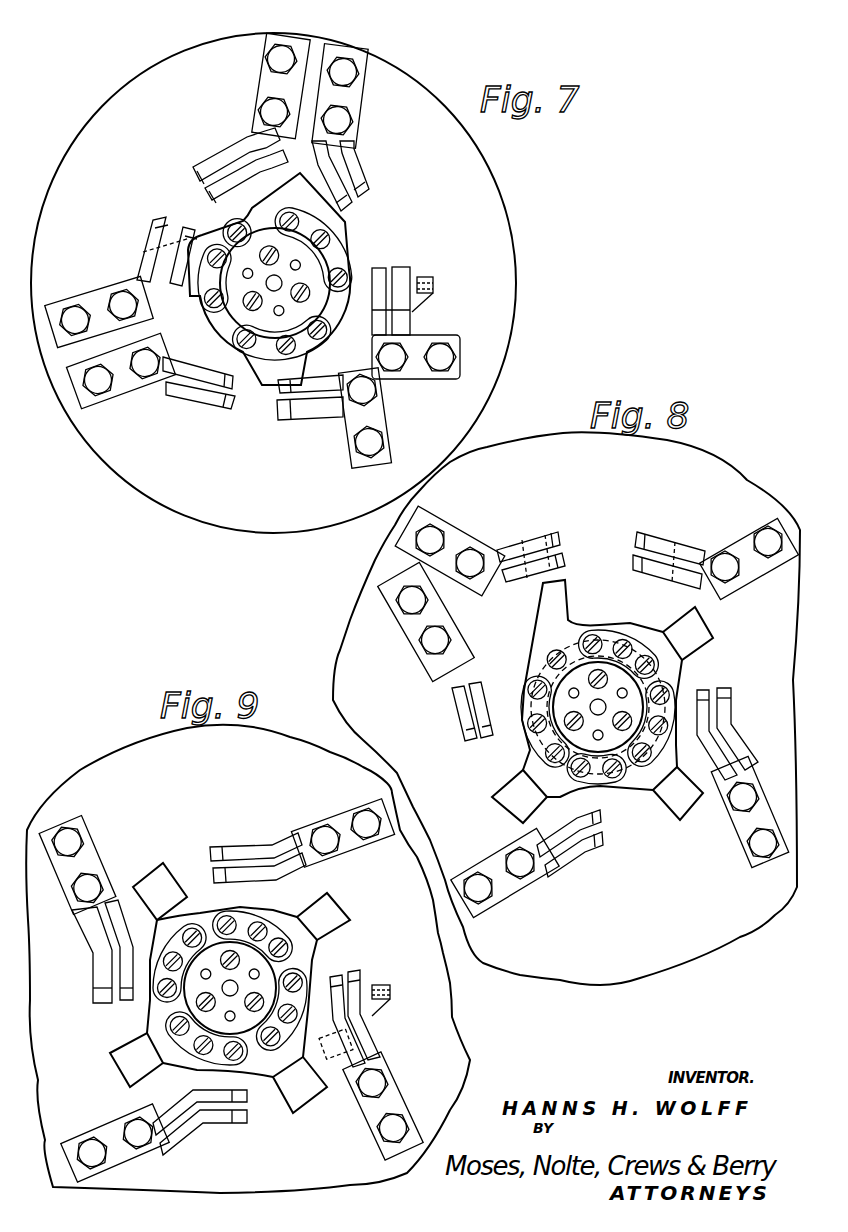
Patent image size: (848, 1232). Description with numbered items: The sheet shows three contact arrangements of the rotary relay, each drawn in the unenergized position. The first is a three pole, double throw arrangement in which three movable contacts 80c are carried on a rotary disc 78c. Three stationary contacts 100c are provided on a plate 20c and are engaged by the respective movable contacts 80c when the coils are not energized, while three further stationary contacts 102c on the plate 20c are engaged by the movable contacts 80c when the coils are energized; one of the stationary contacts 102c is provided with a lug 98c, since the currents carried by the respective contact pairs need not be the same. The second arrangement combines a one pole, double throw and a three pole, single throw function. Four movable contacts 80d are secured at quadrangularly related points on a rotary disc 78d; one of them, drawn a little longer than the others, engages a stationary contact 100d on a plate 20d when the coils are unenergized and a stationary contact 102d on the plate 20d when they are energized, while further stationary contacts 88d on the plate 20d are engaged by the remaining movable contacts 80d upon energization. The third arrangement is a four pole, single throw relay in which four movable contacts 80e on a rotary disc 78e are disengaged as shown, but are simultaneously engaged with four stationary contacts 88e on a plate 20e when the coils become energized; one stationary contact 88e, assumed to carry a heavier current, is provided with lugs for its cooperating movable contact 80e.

In FIG. 7, the plate 20c is at (521, 264).
In FIG. 7, the rotary disc 78c is at (255, 212).
In FIG. 7, the movable contacts 80c is at (197, 236).
In FIG. 7, the lug 98c is at (432, 280).
In FIG. 7, the stationary contacts 100c is at (360, 149).
In FIG. 7, the stationary contacts 102c is at (240, 131).
In FIG. 8, the plate 20d is at (758, 454).
In FIG. 8, the rotary disc 78d is at (540, 758).
In FIG. 8, the movable contacts 80d is at (510, 820).
In FIG. 8, the stationary contacts 88d is at (745, 683).
In FIG. 8, the stationary contact 100d is at (498, 546).
In FIG. 8, the stationary contact 102d is at (700, 513).
In FIG. 9, the plate 20e is at (110, 757).
In FIG. 9, the rotary disc 78e is at (155, 1022).
In FIG. 9, the movable contacts 80e is at (345, 897).
In FIG. 9, the stationary contacts 88e is at (371, 964).